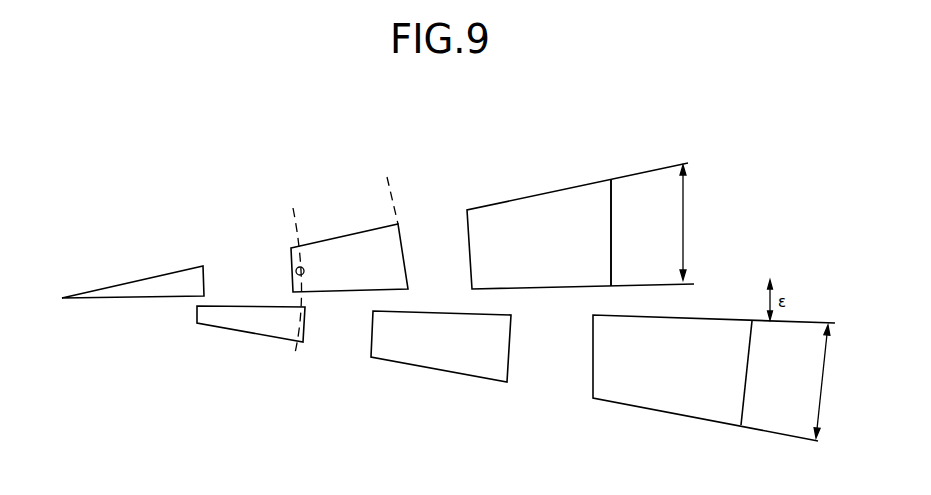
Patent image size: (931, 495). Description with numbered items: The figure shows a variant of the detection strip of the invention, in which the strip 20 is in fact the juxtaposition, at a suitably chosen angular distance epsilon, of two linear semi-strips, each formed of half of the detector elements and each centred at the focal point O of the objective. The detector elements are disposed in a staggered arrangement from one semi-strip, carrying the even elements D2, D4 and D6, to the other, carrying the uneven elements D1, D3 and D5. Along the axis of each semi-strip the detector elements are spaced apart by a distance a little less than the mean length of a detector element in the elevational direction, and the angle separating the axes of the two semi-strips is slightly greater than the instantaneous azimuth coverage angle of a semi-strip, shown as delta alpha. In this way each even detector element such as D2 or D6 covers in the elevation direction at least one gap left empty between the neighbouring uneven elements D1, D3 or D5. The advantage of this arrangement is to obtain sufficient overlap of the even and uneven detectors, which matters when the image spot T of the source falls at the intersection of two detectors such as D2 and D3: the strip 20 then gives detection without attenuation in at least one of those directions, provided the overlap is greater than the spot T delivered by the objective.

The strip 20 is at (643, 183).
The image spot T is at (331, 216).
The focal point O is at (52, 298).
The detector element D1 is at (133, 282).
The detector element D2 is at (251, 324).
The detector element D3 is at (349, 258).
The detector element D4 is at (441, 346).
The detector element D5 is at (598, 226).
The detector element D6 is at (729, 378).